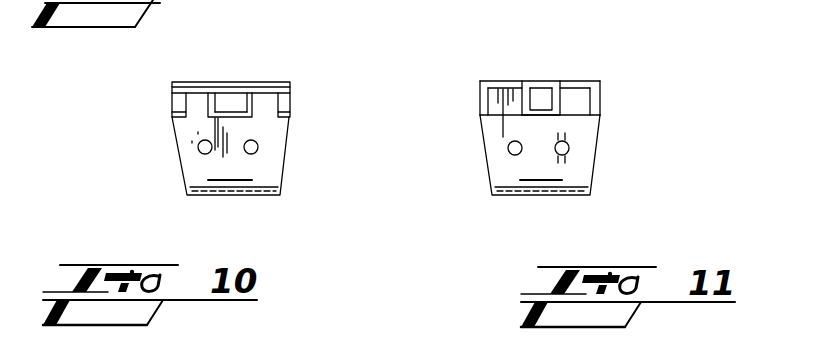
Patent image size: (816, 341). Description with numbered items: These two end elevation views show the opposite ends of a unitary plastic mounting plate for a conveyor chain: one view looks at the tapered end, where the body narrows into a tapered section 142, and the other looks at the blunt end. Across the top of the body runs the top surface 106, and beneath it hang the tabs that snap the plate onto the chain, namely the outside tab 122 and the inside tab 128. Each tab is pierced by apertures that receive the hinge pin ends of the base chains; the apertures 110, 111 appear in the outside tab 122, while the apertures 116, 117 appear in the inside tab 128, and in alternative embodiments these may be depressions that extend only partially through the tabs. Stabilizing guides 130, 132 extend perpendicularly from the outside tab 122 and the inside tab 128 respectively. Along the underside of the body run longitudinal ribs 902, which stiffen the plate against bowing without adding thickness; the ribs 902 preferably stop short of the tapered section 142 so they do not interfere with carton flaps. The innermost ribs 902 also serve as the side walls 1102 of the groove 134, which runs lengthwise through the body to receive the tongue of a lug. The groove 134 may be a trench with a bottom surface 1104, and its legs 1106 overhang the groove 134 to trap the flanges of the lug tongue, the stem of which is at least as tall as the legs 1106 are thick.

In FIG. 11, the top surface 106 is at (504, 76).
In FIG. 10, the aperture 110 is at (258, 149).
In FIG. 10, the aperture 111 is at (199, 105).
In FIG. 11, the aperture 116 is at (509, 150).
In FIG. 11, the aperture 117 is at (566, 154).
In FIG. 10, the outside tab 122 is at (225, 147).
In FIG. 11, the inside tab 128 is at (536, 166).
In FIG. 10, the guide 130 is at (248, 197).
In FIG. 11, the guide 132 is at (538, 197).
In FIG. 11, the groove 134 is at (538, 97).
In FIG. 10, the tapered section 142 is at (172, 96).
In FIG. 10, the longitudinal ribs 902 is at (172, 104).
In FIG. 11, the longitudinal ribs 902 is at (482, 103).
In FIG. 10, the side walls 1102 is at (198, 151).
In FIG. 11, the side walls 1102 is at (520, 100).
In FIG. 10, the bottom surface 1104 is at (227, 117).
In FIG. 11, the bottom surface 1104 is at (569, 147).
In FIG. 11, the legs 1106 is at (546, 90).